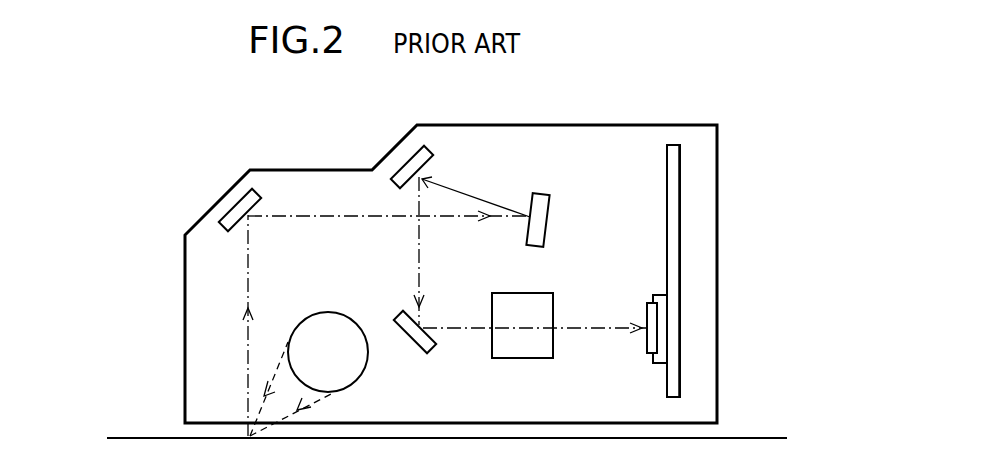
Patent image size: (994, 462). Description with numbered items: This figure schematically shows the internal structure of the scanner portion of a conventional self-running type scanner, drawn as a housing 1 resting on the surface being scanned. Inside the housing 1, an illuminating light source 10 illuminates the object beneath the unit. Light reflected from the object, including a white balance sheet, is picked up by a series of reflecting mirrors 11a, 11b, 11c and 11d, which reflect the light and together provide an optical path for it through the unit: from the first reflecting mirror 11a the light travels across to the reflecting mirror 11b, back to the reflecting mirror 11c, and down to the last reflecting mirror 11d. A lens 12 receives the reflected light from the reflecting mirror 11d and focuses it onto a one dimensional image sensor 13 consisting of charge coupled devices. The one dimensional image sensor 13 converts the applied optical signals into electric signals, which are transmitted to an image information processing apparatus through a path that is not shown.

The housing 1 is at (718, 278).
The illuminating light source 10 is at (313, 312).
The reflecting mirror 11a is at (224, 231).
The reflecting mirror 11b is at (550, 208).
The reflecting mirror 11c is at (427, 145).
The reflecting mirror 11d is at (408, 343).
The lens 12 is at (537, 293).
The one dimensional image sensor 13 is at (647, 347).